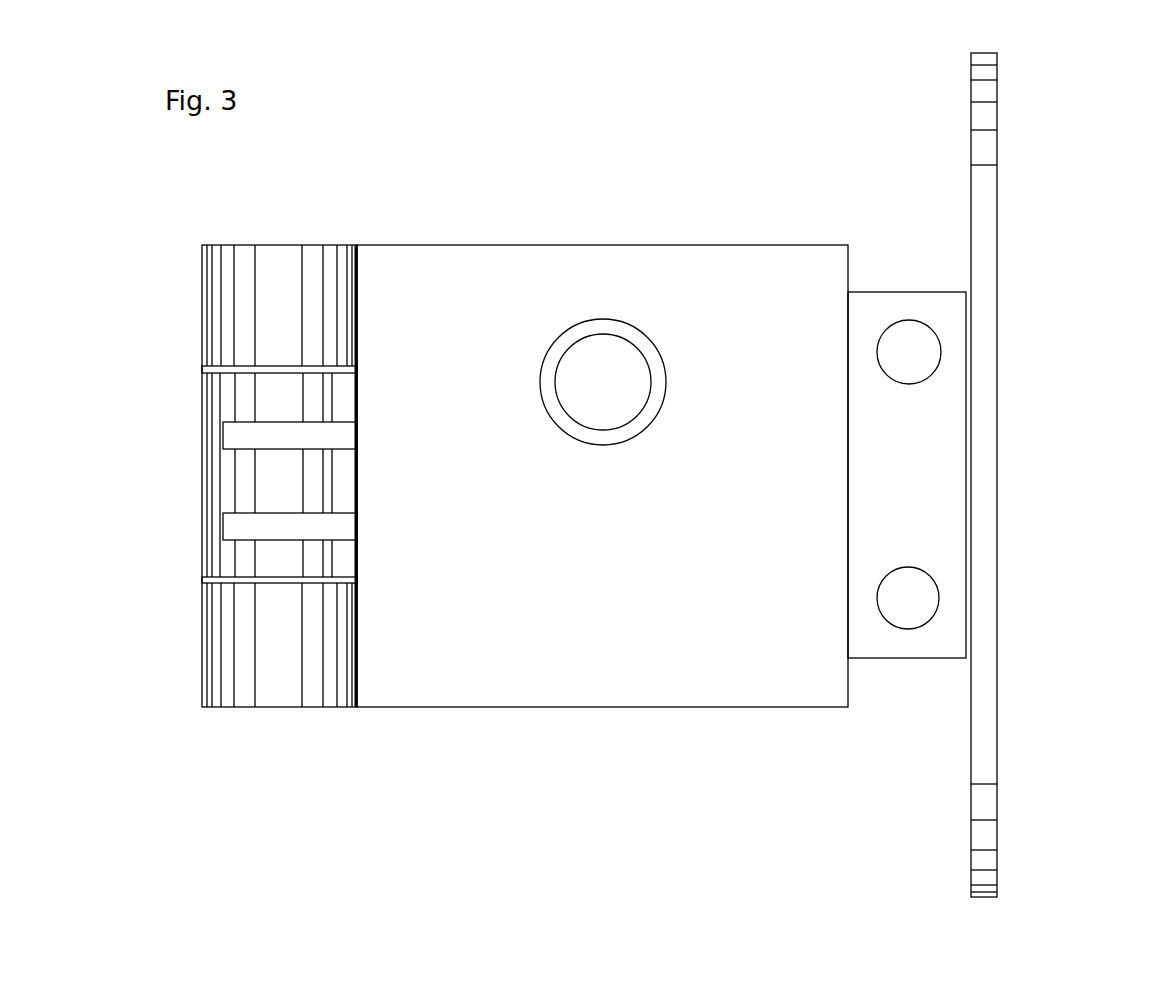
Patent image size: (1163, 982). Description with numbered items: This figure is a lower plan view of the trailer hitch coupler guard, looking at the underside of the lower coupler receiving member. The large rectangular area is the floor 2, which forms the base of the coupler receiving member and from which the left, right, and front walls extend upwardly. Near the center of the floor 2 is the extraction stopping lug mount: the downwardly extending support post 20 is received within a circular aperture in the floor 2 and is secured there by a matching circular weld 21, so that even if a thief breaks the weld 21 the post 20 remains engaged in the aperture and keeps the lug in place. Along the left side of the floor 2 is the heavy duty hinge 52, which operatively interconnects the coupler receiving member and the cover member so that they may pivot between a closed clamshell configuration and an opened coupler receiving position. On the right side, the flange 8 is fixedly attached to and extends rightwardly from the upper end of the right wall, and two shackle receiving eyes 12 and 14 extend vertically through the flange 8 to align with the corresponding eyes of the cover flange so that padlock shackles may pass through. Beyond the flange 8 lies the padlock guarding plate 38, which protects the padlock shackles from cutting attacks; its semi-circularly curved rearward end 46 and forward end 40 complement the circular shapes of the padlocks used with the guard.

The floor 2 is at (754, 348).
The flange 8 is at (935, 427).
The shackle receiving eye 12 is at (907, 600).
The shackle receiving eye 14 is at (900, 348).
The support post 20 is at (591, 380).
The circular weld 21 is at (648, 357).
The padlock guarding plate 38 is at (983, 460).
The forward end 40 is at (983, 837).
The rearward end 46 is at (983, 115).
The heavy duty hinge 52 is at (279, 272).